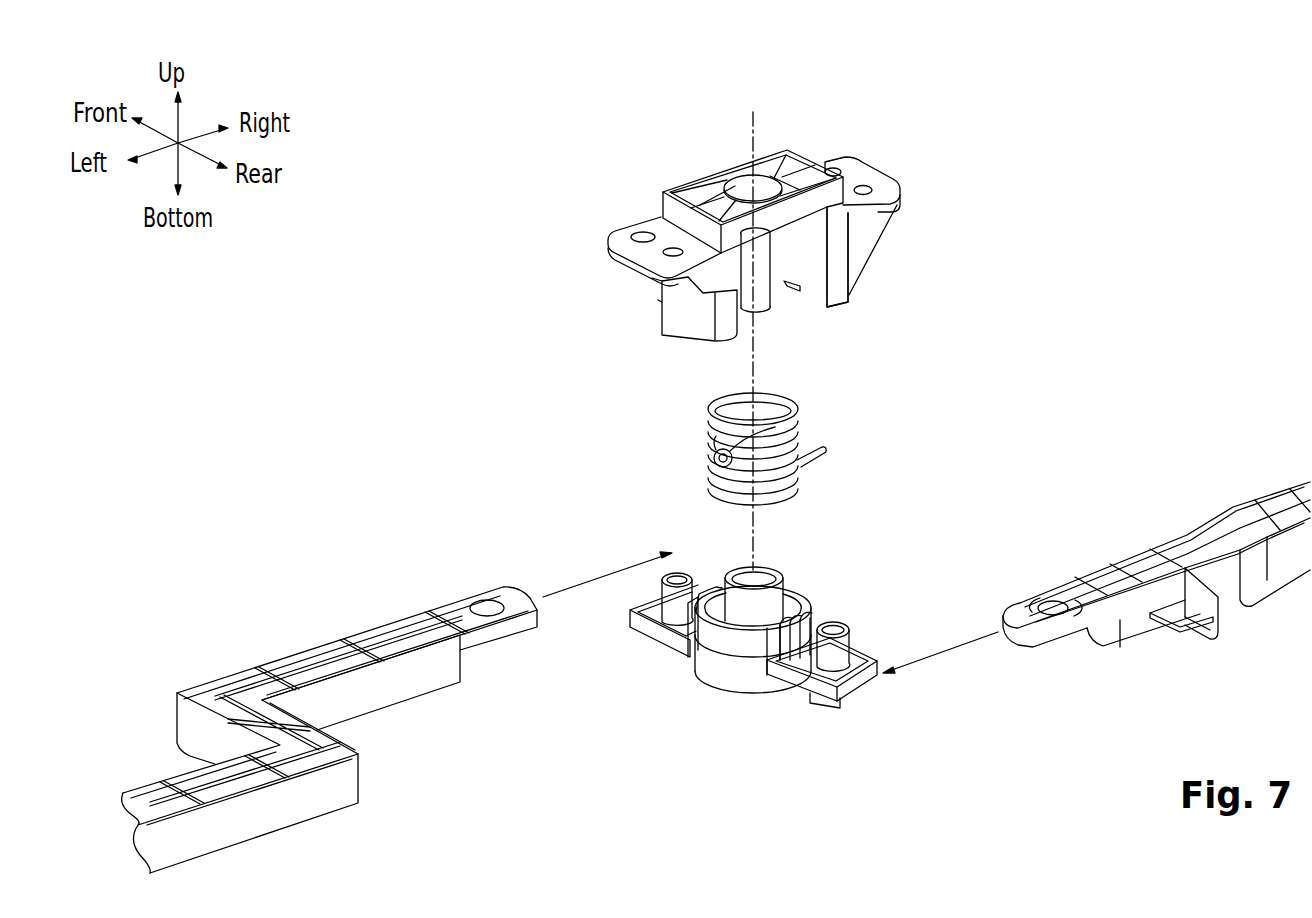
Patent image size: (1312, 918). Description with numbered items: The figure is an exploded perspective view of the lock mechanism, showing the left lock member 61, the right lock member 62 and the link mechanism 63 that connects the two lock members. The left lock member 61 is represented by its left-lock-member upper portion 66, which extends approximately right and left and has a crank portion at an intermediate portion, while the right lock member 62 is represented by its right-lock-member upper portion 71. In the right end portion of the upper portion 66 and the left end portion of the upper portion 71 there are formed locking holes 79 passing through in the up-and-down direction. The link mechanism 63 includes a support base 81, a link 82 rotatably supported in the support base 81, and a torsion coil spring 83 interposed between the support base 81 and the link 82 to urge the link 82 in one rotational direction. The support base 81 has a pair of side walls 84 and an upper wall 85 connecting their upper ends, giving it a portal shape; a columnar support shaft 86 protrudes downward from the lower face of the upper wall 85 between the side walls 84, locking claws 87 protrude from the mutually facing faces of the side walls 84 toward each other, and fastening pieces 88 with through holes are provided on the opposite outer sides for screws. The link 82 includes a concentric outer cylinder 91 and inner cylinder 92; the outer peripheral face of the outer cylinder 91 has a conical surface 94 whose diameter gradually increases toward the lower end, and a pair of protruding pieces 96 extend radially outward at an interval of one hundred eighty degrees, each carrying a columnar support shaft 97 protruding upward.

The left lock member 61 is at (345, 618).
The right lock member 62 is at (1260, 470).
The link mechanism 63 is at (823, 381).
The left-lock-member upper portion 66 is at (285, 667).
The right-lock-member upper portion 71 is at (1182, 553).
The locking holes 79 is at (487, 602).
The support base 81 is at (800, 142).
The link 82 is at (800, 561).
The torsion coil spring 83 is at (797, 431).
The side walls 84 is at (813, 258).
The upper wall 85 is at (719, 170).
The support shaft 86 is at (767, 308).
The locking claws 87 is at (787, 288).
The fastening pieces 88 is at (868, 175).
The outer cylinder 91 is at (732, 683).
The inner cylinder 92 is at (742, 570).
The conical surface 94 is at (712, 645).
The protruding pieces 96 is at (662, 632).
The support shaft 97 is at (657, 588).